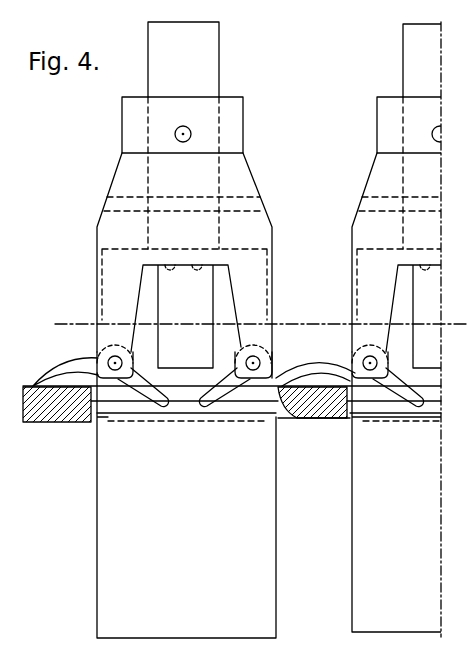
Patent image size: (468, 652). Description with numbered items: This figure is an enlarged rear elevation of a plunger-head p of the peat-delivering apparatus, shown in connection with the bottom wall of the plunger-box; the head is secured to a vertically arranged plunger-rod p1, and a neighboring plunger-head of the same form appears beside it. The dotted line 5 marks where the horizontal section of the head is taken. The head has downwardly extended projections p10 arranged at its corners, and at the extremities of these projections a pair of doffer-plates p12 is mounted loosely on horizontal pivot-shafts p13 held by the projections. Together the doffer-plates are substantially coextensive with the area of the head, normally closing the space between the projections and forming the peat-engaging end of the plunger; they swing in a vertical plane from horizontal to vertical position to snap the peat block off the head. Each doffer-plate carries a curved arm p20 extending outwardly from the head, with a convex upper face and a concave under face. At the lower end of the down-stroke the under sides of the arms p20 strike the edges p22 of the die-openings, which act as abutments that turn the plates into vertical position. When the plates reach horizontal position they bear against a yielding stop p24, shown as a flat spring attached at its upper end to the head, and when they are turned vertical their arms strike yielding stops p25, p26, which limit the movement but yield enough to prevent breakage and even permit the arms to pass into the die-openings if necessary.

The plunger-rod p1 is at (212, 80).
The plunger-head p is at (244, 147).
The downwardly extended projections p10 is at (117, 299).
The yielding stop p25 is at (101, 271).
The yielding stop p26 is at (272, 284).
The yielding stop p24 is at (294, 316).
The section line 5- 5 is at (252, 325).
The pivot-shafts p13 is at (115, 371).
The doffer-plates p12 is at (204, 411).
The curved arm p20 is at (70, 362).
The edges of the die-openings p22 is at (52, 386).